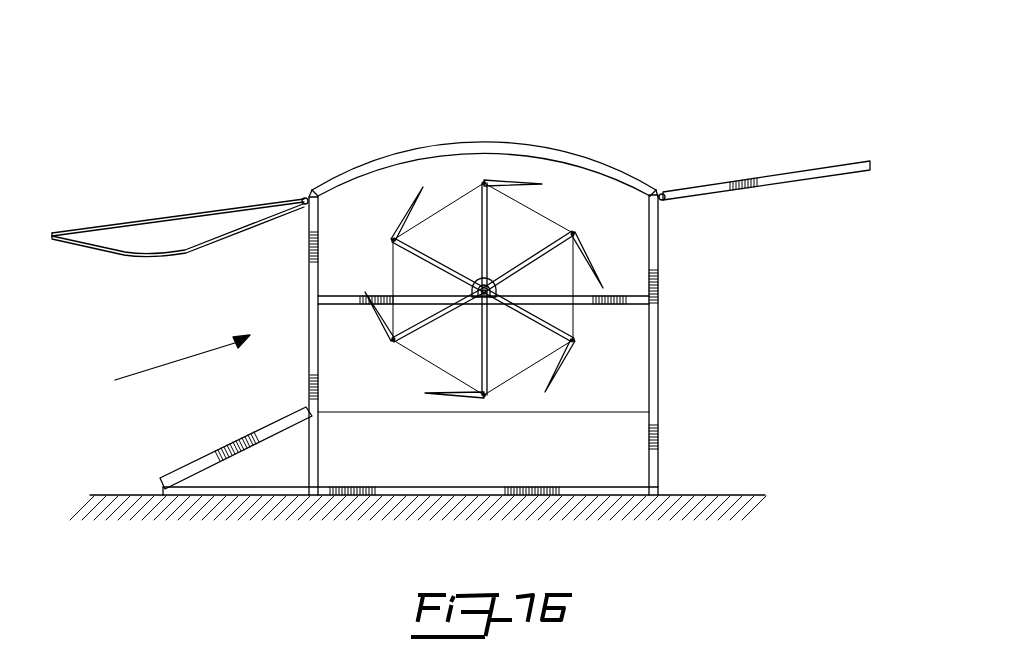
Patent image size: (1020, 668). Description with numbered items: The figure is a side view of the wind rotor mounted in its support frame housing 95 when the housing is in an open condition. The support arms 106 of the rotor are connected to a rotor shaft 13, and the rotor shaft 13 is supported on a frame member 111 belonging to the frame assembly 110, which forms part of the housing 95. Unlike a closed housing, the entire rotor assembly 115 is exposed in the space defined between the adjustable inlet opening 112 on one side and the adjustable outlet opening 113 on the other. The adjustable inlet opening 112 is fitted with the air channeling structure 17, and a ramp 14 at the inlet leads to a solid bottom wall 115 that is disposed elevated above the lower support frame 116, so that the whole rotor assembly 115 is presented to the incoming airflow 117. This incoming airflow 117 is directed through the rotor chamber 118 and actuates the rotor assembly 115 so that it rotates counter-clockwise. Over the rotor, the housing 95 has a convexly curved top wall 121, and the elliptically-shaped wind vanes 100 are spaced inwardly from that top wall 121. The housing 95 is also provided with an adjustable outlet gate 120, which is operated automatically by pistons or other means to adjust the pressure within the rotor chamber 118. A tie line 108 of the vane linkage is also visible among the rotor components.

The rotor shaft 13 is at (487, 294).
The ramp 14 is at (185, 466).
The air channeling structure 17 is at (139, 206).
The housing 95 is at (512, 130).
The wind vanes 100 is at (400, 220).
The support arms 106 is at (430, 327).
The blade tie line 108 is at (393, 273).
The frame assembly 110 is at (294, 263).
The frame member 111 is at (612, 305).
The adjustable inlet opening 112 is at (310, 358).
The adjustable outlet opening 113 is at (658, 258).
The rotor assembly 115 is at (628, 176).
The lower support frame 116 is at (533, 493).
The incoming airflow 117 is at (162, 363).
The rotor chamber 118 is at (440, 190).
The adjustable outlet gate 120 is at (770, 167).
The convexly curved top wall 121 is at (592, 208).